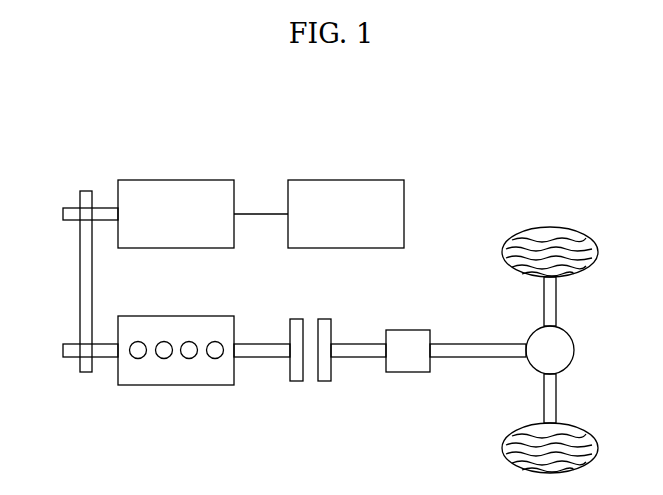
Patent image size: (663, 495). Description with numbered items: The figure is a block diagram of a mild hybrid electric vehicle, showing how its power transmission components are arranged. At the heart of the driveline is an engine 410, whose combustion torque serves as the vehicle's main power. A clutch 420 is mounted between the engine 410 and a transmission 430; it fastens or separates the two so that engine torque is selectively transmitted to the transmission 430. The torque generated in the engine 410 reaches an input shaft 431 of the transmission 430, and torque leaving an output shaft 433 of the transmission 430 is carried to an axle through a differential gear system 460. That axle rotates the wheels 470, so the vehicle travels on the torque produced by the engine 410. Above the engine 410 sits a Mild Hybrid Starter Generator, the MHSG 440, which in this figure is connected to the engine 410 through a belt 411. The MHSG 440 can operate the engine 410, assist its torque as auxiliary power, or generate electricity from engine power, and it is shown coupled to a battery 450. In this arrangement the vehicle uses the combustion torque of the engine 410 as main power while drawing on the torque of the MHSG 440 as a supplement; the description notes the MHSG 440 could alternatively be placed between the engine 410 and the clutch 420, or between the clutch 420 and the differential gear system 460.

The engine 410 is at (172, 316).
The belt 411 is at (80, 276).
The clutch 420 is at (310, 316).
The transmission 430 is at (407, 330).
The input shaft 431 is at (360, 357).
The output shaft 433 is at (470, 357).
The Mild Hybrid Starter Generator (MHSG) 440 is at (172, 180).
The battery 450 is at (343, 180).
The differential gear system 460 is at (574, 350).
The wheels 470 is at (550, 225).